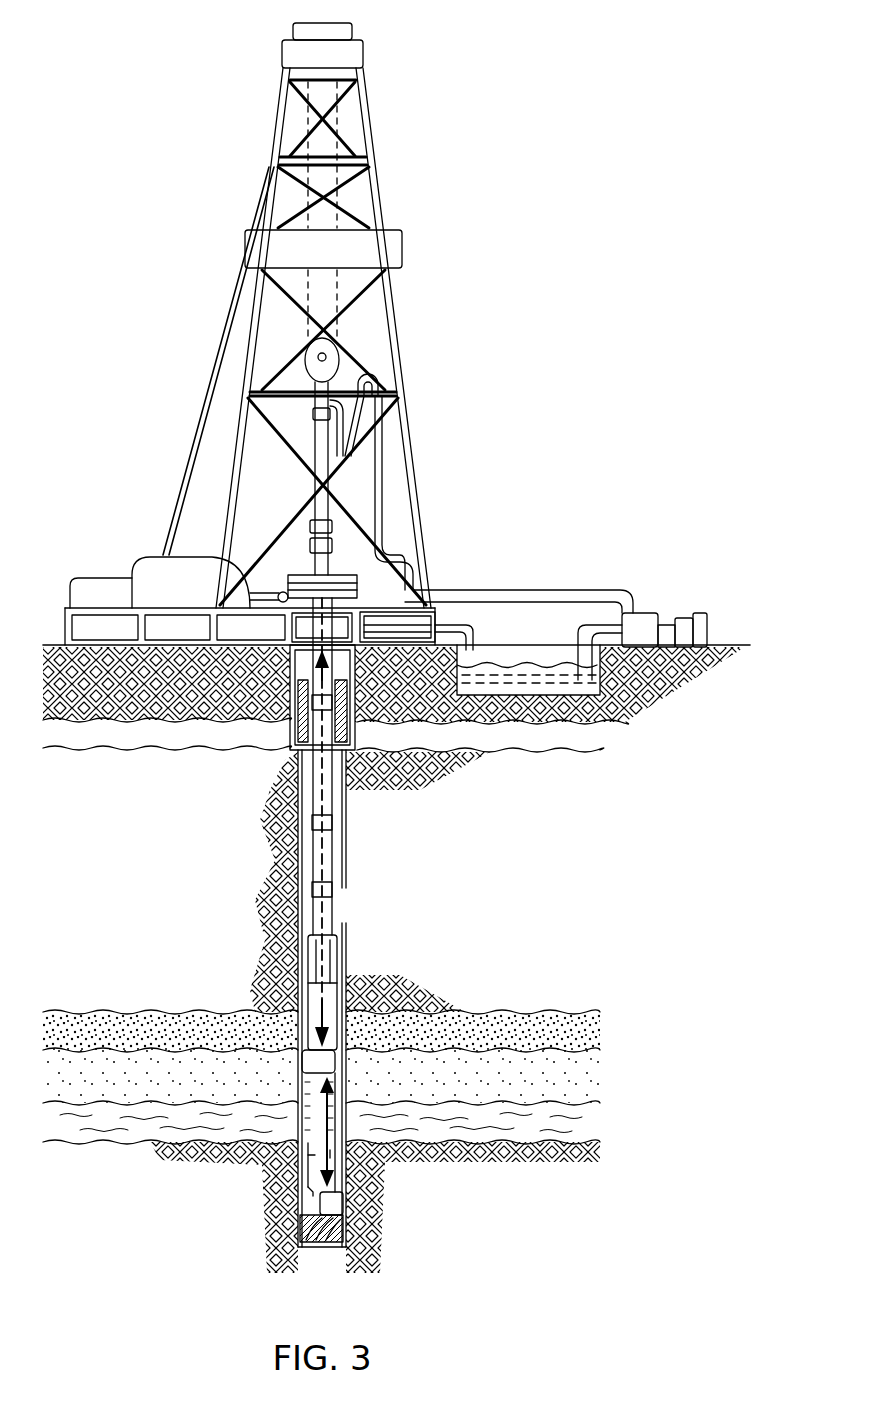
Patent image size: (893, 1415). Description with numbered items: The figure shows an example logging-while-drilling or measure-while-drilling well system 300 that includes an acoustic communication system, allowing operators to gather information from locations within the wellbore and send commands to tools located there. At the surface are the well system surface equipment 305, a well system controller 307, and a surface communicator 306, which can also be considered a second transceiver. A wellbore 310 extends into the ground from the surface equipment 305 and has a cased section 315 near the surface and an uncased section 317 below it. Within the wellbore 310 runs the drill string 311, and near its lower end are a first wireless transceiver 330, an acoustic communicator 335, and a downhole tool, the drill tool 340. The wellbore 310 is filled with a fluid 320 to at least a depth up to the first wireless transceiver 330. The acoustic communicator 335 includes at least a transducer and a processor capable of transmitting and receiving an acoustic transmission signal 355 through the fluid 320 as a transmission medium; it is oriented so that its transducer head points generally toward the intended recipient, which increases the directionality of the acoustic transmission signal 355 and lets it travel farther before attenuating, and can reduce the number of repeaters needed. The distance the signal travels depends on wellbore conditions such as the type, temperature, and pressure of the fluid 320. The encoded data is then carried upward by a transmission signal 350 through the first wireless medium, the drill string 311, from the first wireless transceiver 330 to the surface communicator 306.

The LWD/MWD well system 300 is at (166, 78).
The well system surface equipment 305 is at (404, 347).
The surface communicator 306 is at (300, 630).
The well system controller 307 is at (192, 627).
The wellbore 310 is at (290, 832).
The drill string 311 is at (333, 800).
The cased section 315 is at (357, 707).
The uncased section 317 is at (344, 907).
The fluid 320 is at (300, 1118).
The first wireless transceiver 330 is at (303, 1063).
The acoustic communicator 335 is at (338, 1205).
The drill tool 340 is at (322, 1248).
The transmission signal 350 is at (324, 970).
The acoustic transmission signal 355 is at (340, 1105).